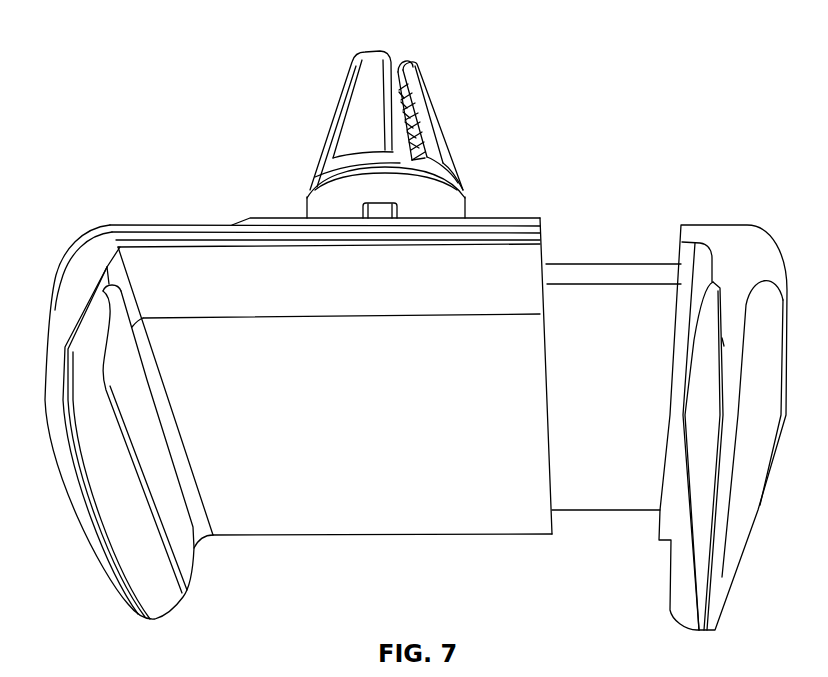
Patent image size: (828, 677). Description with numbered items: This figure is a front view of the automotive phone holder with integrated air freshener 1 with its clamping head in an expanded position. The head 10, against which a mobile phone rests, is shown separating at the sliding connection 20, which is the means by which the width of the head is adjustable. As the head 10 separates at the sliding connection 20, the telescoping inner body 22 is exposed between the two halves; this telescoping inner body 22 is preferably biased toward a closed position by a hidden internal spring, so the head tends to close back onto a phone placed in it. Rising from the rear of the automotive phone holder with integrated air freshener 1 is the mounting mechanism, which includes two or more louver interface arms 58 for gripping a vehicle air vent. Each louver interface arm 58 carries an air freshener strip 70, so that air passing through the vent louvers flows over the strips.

The automotive phone holder with integrated air freshener 1 is at (644, 102).
The head 10 is at (53, 248).
The sliding connection 20 is at (547, 252).
The telescoping inner body 22 is at (608, 408).
The louver interface arm 58 is at (386, 50).
The air freshener strip 70 is at (357, 107).